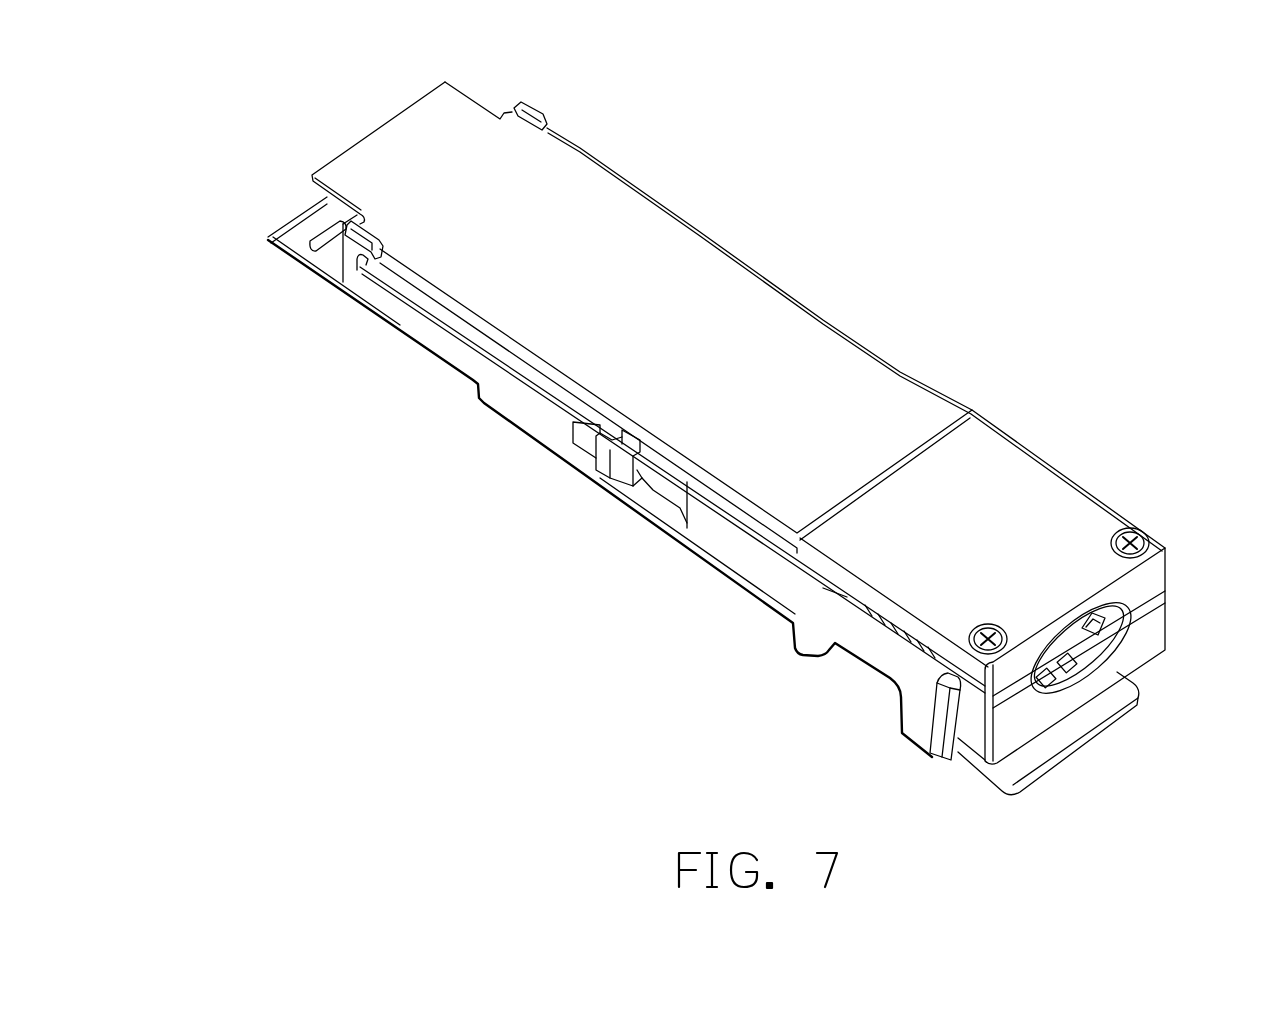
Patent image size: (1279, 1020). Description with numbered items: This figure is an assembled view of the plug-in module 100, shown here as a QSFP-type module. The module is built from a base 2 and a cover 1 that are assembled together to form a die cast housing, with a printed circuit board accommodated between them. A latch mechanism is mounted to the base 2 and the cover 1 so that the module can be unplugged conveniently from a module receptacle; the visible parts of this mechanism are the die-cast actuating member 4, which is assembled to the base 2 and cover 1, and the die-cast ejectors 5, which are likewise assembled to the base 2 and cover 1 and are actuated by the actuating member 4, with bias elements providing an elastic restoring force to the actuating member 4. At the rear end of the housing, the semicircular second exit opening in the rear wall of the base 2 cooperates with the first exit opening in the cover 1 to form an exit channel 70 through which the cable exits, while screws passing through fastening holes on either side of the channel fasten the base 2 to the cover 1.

The plug-in module 100 is at (774, 47).
The cover 1 is at (505, 404).
The base 2 is at (817, 380).
The actuating member 4 is at (710, 523).
The ejectors 5 is at (598, 447).
The exit channel 70 is at (1082, 642).